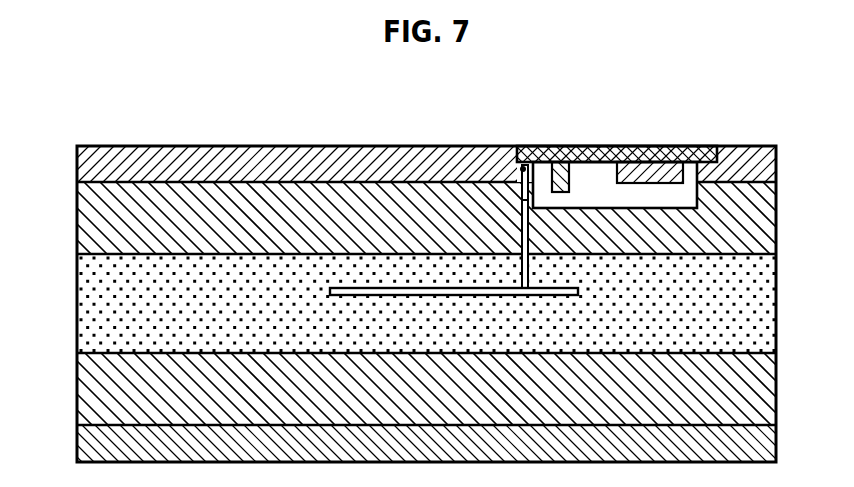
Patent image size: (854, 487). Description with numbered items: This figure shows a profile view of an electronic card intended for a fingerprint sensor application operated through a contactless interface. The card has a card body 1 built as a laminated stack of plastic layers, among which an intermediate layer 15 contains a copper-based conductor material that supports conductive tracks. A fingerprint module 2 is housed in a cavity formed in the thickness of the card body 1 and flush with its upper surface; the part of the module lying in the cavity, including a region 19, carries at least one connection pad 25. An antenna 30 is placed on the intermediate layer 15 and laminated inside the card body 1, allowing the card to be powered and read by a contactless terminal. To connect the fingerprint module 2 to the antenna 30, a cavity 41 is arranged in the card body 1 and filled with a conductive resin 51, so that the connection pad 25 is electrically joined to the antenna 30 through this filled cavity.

The card body 1 is at (422, 304).
The fingerprint module 2 is at (560, 183).
The intermediate layer 15 is at (104, 303).
The component cavity 19 is at (588, 177).
The connection pad 25 is at (523, 169).
The antenna 30 is at (455, 288).
The cavity 41 is at (521, 208).
The conductive resin 51 is at (508, 212).